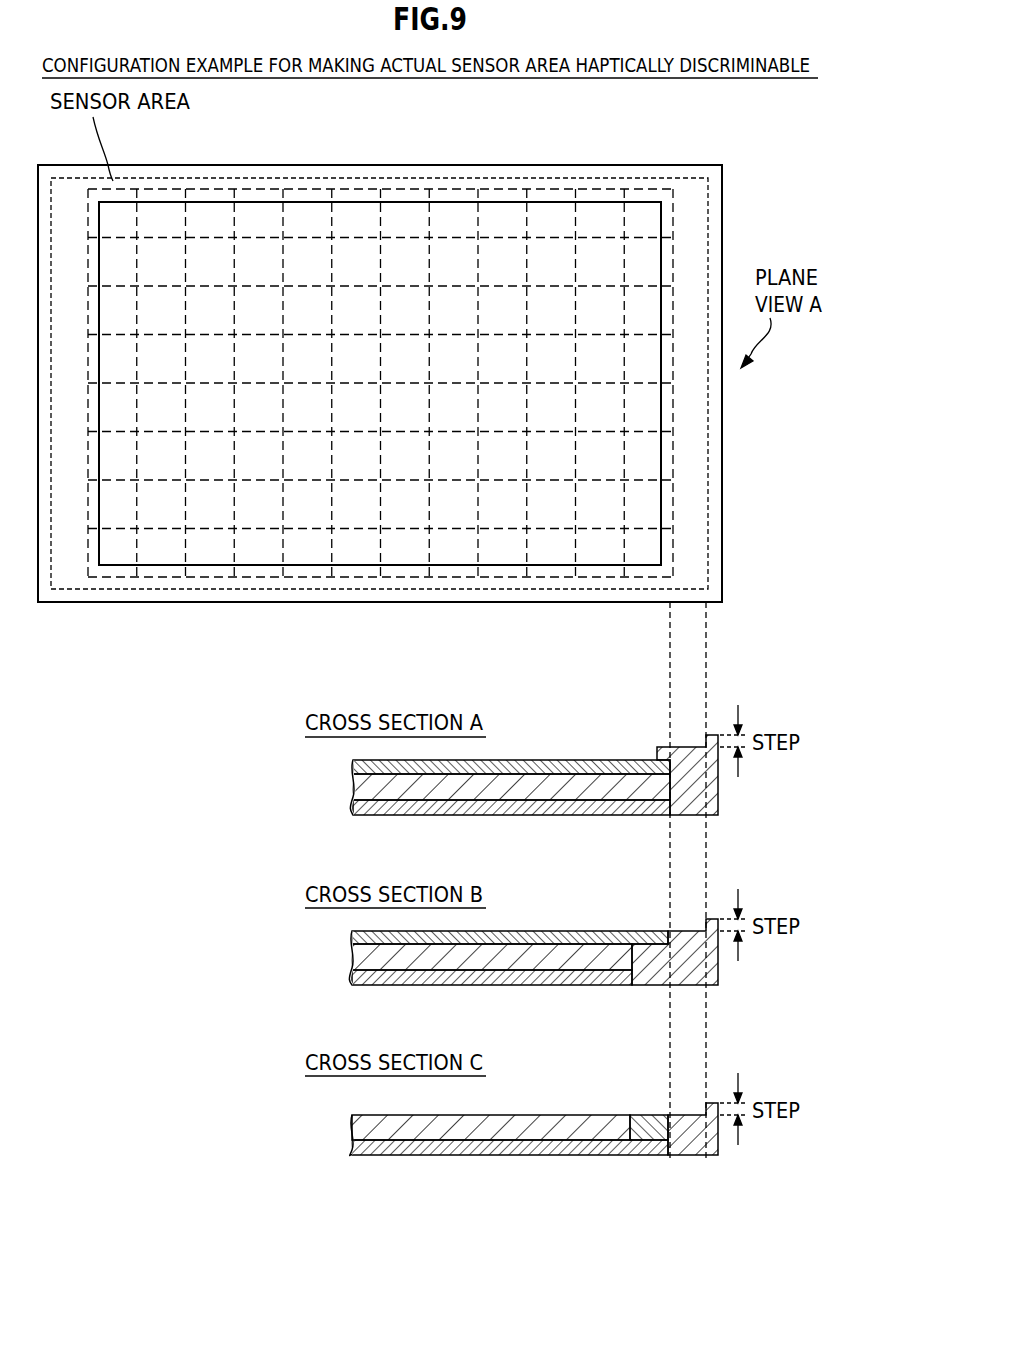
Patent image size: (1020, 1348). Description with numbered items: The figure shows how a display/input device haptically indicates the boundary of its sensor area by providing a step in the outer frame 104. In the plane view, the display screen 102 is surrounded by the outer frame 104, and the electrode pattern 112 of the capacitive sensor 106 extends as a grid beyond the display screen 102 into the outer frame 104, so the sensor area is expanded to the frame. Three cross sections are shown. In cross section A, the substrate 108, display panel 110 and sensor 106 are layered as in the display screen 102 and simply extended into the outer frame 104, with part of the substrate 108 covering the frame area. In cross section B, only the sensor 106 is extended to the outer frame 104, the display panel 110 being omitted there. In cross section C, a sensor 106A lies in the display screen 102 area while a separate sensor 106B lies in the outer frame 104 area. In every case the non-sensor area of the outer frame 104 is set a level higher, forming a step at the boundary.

The display screen 102 is at (404, 215).
The outer frame 104 is at (637, 171).
The sensor 106 is at (518, 758).
The sensor 106A is at (377, 1133).
The sensor 106B is at (640, 1139).
The substrate 108 is at (392, 807).
The display panel 110 is at (365, 784).
The electrode pattern 112 is at (248, 191).